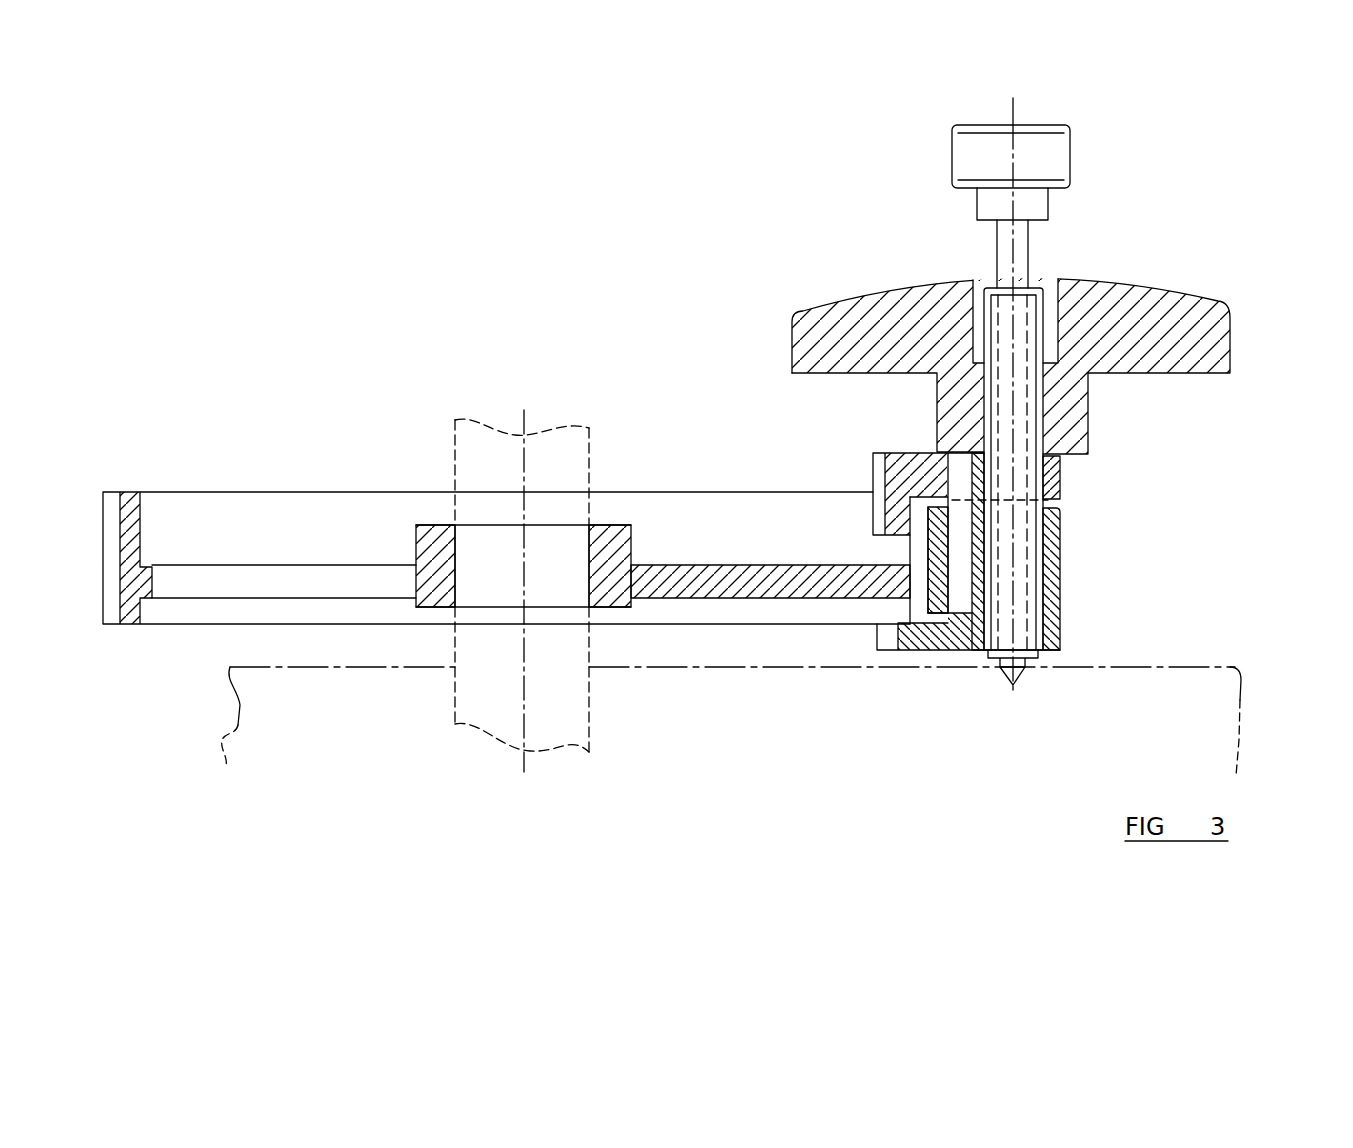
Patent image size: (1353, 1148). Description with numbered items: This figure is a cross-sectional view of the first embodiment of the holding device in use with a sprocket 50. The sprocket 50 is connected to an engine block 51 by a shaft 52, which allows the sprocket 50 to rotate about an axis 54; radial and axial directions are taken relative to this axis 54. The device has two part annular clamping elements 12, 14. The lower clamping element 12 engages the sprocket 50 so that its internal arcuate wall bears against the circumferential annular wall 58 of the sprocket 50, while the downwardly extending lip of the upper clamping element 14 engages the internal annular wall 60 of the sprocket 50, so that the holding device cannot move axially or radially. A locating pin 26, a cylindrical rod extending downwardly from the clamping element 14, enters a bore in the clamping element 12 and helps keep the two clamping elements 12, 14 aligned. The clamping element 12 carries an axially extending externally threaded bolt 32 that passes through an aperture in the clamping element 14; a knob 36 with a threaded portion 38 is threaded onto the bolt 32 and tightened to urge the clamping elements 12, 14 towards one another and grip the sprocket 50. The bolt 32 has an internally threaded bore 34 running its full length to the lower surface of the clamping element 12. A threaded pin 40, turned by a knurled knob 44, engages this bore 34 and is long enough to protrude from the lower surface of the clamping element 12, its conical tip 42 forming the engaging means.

The clamping element 12 is at (1053, 600).
The clamping element 14 is at (1052, 490).
The locating pin 26 is at (958, 466).
The bolt 32 is at (1046, 320).
The internally threaded bore 34 is at (976, 284).
The knob 36 is at (1232, 350).
The threaded portion 38 is at (1045, 420).
The threaded pin 40 is at (1030, 262).
The conical tip 42 is at (1017, 682).
The knurled knob 44 is at (1070, 168).
The sprocket 50 is at (107, 565).
The engine block 51 is at (232, 738).
The shaft 52 is at (455, 488).
The axis 54 is at (527, 407).
The circumferential annular wall 58 is at (962, 641).
The internal annular wall 60 is at (912, 548).